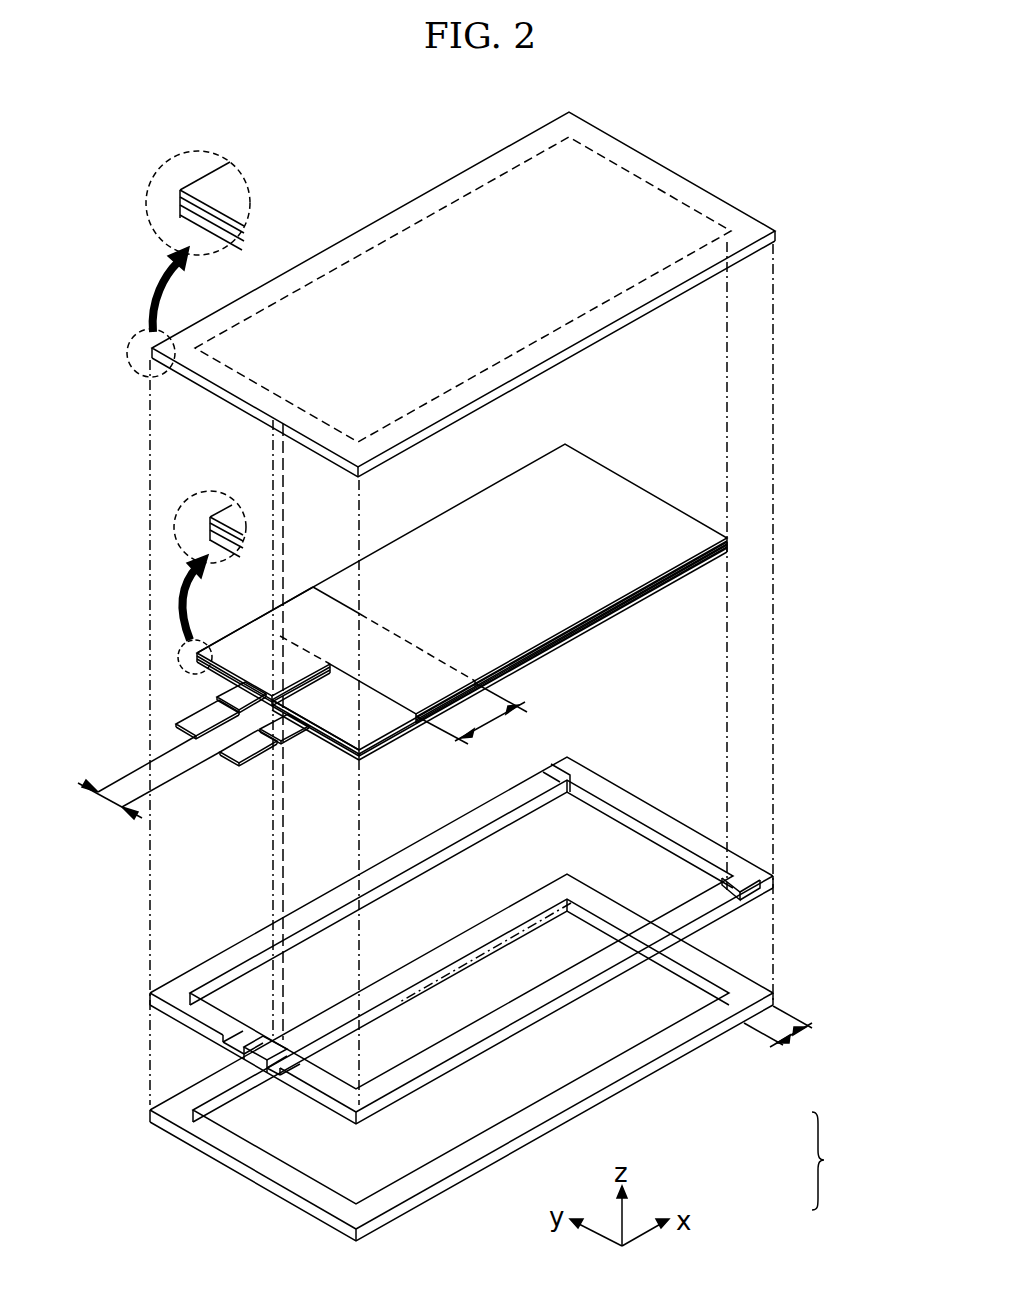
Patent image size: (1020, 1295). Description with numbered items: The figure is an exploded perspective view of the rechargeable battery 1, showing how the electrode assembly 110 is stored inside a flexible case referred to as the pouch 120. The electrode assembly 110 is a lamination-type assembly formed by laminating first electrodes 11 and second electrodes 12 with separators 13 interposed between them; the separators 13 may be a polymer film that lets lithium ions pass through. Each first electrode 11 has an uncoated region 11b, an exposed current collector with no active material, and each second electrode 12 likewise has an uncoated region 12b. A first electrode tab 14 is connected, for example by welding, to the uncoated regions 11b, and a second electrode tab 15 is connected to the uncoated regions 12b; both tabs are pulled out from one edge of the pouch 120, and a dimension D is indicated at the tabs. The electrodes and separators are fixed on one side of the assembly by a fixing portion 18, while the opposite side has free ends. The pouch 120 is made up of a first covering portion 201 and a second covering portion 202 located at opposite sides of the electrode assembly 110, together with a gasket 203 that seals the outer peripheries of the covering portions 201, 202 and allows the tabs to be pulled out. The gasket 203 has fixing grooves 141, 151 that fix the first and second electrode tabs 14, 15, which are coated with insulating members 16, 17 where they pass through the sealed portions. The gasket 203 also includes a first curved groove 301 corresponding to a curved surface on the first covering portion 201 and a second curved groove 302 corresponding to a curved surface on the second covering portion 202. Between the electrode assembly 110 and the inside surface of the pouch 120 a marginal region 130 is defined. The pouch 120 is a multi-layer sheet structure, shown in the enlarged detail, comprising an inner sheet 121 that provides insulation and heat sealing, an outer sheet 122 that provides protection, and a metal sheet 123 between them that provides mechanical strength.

The rechargeable battery 1 is at (382, 116).
The first electrode 11 is at (203, 553).
The second electrode 12 is at (227, 513).
The separator 13 is at (212, 522).
The uncoated region 11b is at (340, 706).
The uncoated region 12b is at (259, 655).
The first electrode tab 14 is at (236, 750).
The second electrode tab 15 is at (190, 727).
The insulating member 16 is at (293, 720).
The insulating member 17 is at (223, 688).
The fixing portion 18 is at (471, 717).
The distance between leads D is at (149, 784).
The electrode assembly 110 is at (643, 478).
The pouch 120 is at (818, 1160).
The inner sheet 121 is at (181, 216).
The outer sheet 122 is at (181, 191).
The metal sheet 123 is at (181, 206).
The marginal region 130 is at (797, 1040).
The fixing groove 141 is at (262, 1072).
The fixing groove 151 is at (218, 1040).
The first covering portion 201 is at (750, 986).
The second covering portion 202 is at (747, 224).
The gasket 203 is at (740, 863).
The first curved groove 301 is at (748, 903).
The second curved groove 302 is at (748, 886).